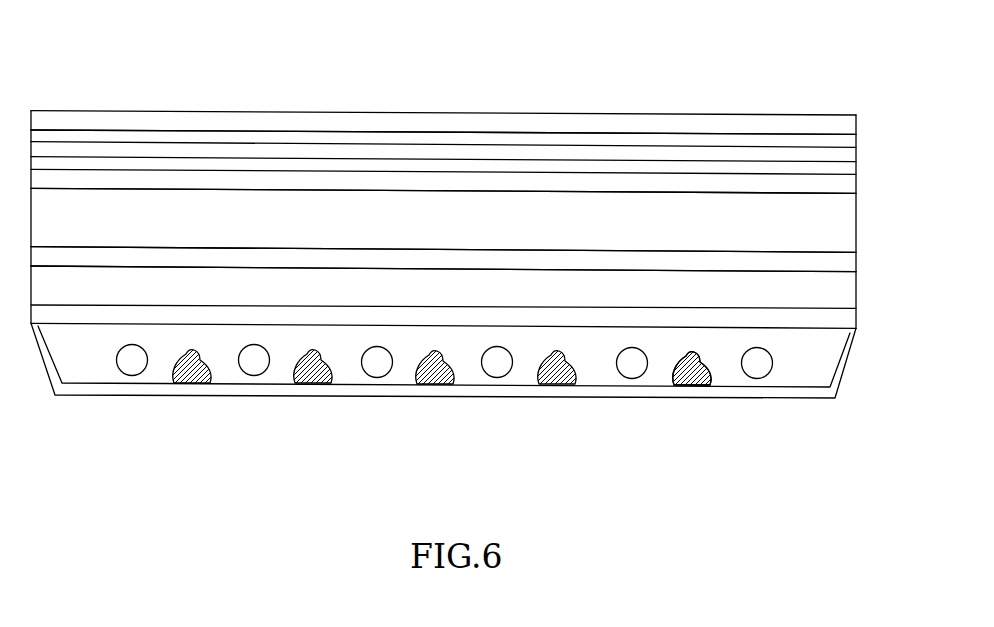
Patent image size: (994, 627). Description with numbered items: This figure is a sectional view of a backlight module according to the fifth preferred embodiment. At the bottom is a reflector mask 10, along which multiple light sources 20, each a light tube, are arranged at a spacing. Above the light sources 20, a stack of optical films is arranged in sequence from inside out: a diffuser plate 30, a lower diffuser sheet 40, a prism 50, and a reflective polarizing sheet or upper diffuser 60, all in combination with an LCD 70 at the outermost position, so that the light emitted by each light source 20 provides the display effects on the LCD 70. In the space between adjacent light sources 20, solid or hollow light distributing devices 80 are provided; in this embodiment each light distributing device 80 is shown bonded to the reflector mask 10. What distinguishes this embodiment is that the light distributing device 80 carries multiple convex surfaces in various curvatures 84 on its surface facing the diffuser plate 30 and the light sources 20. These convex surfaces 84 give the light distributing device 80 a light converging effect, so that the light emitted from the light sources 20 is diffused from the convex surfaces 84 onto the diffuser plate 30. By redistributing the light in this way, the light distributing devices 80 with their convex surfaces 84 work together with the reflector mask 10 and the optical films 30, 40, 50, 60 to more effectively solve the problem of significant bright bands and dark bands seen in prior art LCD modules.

The reflector mask 10 is at (282, 390).
The light sources 20 is at (135, 376).
The diffuser plate 30 is at (858, 325).
The lower diffuser sheet 40 is at (858, 263).
The prism 50 is at (858, 182).
The reflective polarizing sheet or upper diffuser 60 is at (806, 155).
The LCD 70 is at (521, 115).
The light distributing device 80 is at (557, 384).
The convex surfaces in various curvatures 84 is at (690, 350).